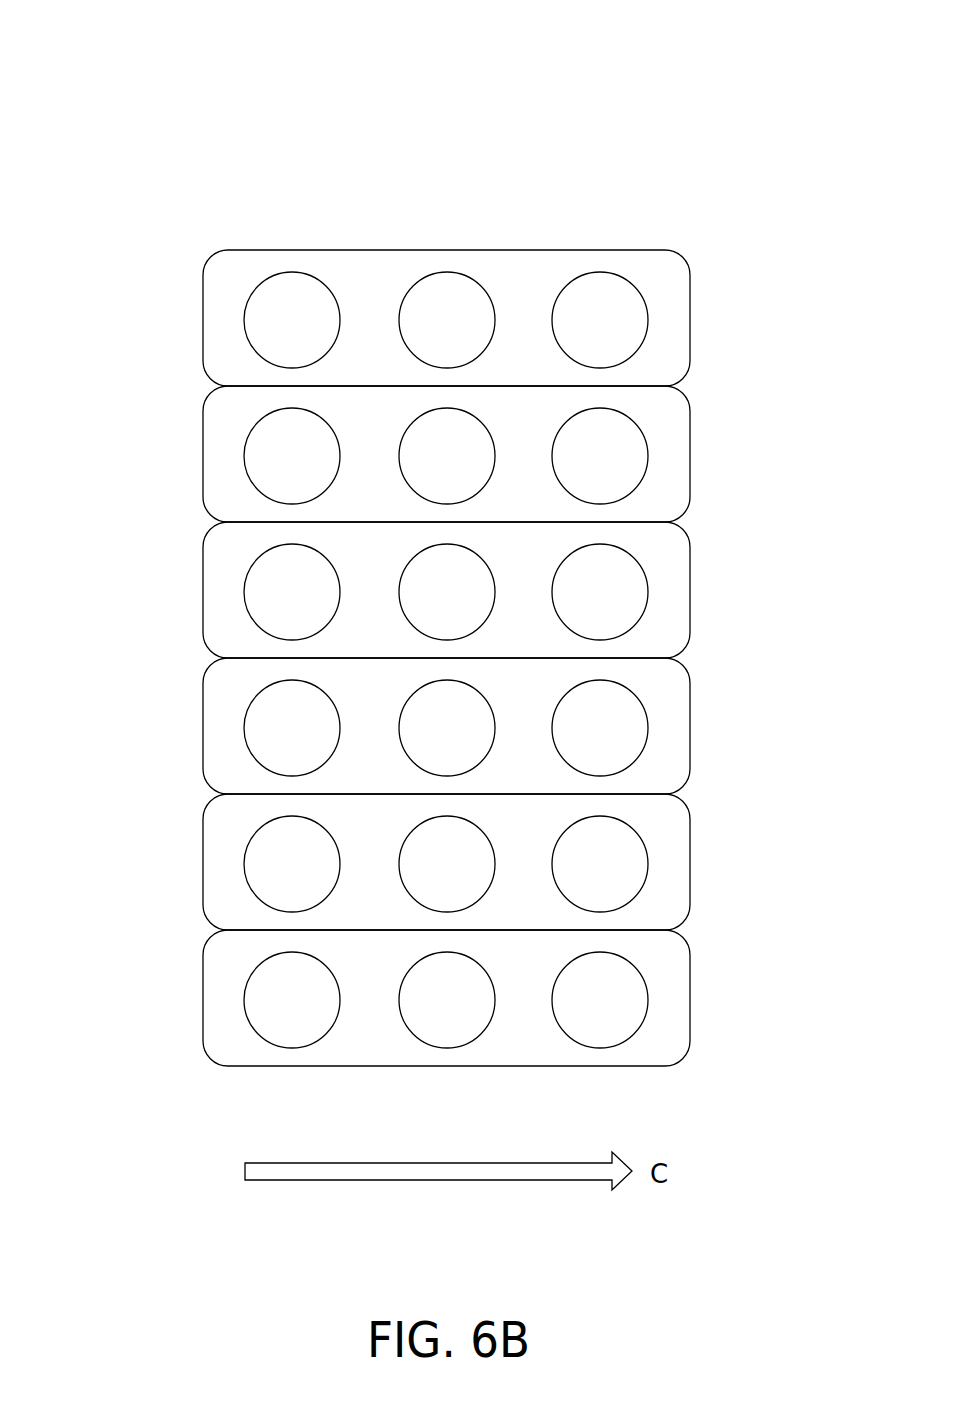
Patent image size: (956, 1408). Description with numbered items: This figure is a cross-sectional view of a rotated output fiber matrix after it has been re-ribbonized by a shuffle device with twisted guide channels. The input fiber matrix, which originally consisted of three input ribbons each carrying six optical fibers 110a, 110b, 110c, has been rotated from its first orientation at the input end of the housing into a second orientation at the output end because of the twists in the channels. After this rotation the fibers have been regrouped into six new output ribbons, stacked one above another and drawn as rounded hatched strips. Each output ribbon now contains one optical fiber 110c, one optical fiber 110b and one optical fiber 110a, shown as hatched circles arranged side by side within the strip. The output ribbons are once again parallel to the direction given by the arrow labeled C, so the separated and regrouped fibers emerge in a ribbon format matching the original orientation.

The optical fiber 110a is at (600, 660).
The optical fiber 110b is at (447, 660).
The optical fiber 110c is at (292, 660).